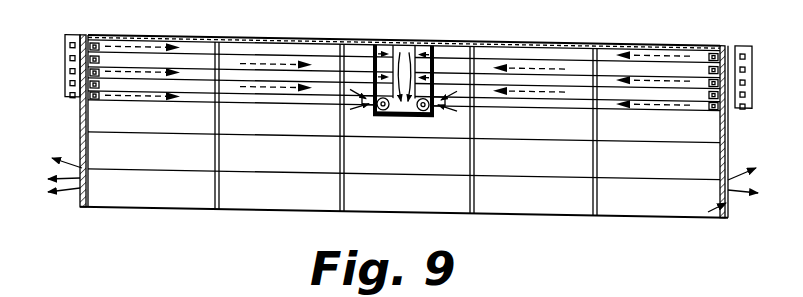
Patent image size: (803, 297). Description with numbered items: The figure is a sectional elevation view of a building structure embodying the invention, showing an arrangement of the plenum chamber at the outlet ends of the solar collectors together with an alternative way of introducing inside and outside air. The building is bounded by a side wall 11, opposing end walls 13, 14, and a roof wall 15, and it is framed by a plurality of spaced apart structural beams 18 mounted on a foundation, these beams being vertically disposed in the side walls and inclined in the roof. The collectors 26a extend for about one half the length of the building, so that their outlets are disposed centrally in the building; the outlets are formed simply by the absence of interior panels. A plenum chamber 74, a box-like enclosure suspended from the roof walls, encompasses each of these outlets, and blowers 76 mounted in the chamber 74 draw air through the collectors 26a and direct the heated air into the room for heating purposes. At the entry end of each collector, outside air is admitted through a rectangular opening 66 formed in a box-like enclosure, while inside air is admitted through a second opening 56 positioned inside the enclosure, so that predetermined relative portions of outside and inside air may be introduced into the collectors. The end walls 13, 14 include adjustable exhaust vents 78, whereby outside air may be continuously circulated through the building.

The side wall 11 is at (298, 219).
The end wall 13 is at (78, 134).
The end wall 14 is at (725, 220).
The roof wall 15 is at (90, 36).
The structural beam 18 is at (472, 198).
The collector 26a is at (283, 88).
The second opening 56 is at (108, 60).
The rectangular opening 66 is at (64, 50).
The plenum chamber 74 is at (404, 114).
The blower 76 is at (384, 112).
The adjustable exhaust vent 78 is at (84, 171).